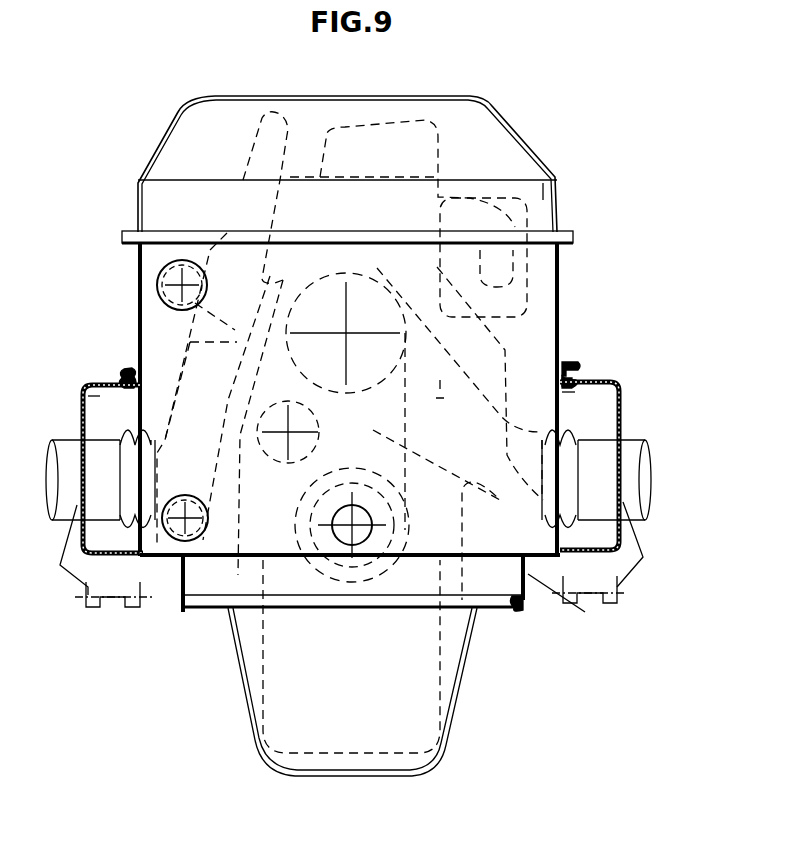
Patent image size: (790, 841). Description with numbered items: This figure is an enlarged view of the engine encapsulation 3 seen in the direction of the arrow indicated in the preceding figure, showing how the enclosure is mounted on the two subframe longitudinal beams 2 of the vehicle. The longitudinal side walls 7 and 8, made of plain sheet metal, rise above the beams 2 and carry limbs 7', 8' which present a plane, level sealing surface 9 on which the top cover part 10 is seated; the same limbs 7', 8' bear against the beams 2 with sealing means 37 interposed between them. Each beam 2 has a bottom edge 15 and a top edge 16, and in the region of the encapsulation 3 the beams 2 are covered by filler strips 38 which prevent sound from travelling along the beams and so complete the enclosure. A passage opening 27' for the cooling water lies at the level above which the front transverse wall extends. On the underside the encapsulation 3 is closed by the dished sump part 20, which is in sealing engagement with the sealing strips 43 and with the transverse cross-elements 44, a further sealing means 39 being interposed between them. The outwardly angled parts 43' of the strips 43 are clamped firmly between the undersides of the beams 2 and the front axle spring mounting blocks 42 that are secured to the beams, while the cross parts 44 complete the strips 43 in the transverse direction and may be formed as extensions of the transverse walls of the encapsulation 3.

The top cover part 10 is at (508, 135).
The encapsulation 3 is at (566, 206).
The sealing surface 9 is at (152, 240).
The longitudinal side wall 7 is at (113, 399).
The limb 7' is at (112, 319).
The longitudinal side wall 8 is at (582, 399).
The limb 8' is at (584, 316).
The sealing means 37 is at (576, 375).
The top edge 16 is at (100, 383).
The subframe longitudinal beam 2 is at (82, 405).
The cross-element 44 is at (222, 575).
The sealing means 39 is at (524, 605).
The sump part 20 is at (262, 750).
The front axle spring mounting block 42 is at (78, 574).
The sealing strip 43 is at (571, 603).
The outwardly angled part 43' is at (137, 609).
The bottom edge 15 is at (114, 570).
The passage opening 27' is at (170, 598).
The filler strip 38 is at (100, 535).